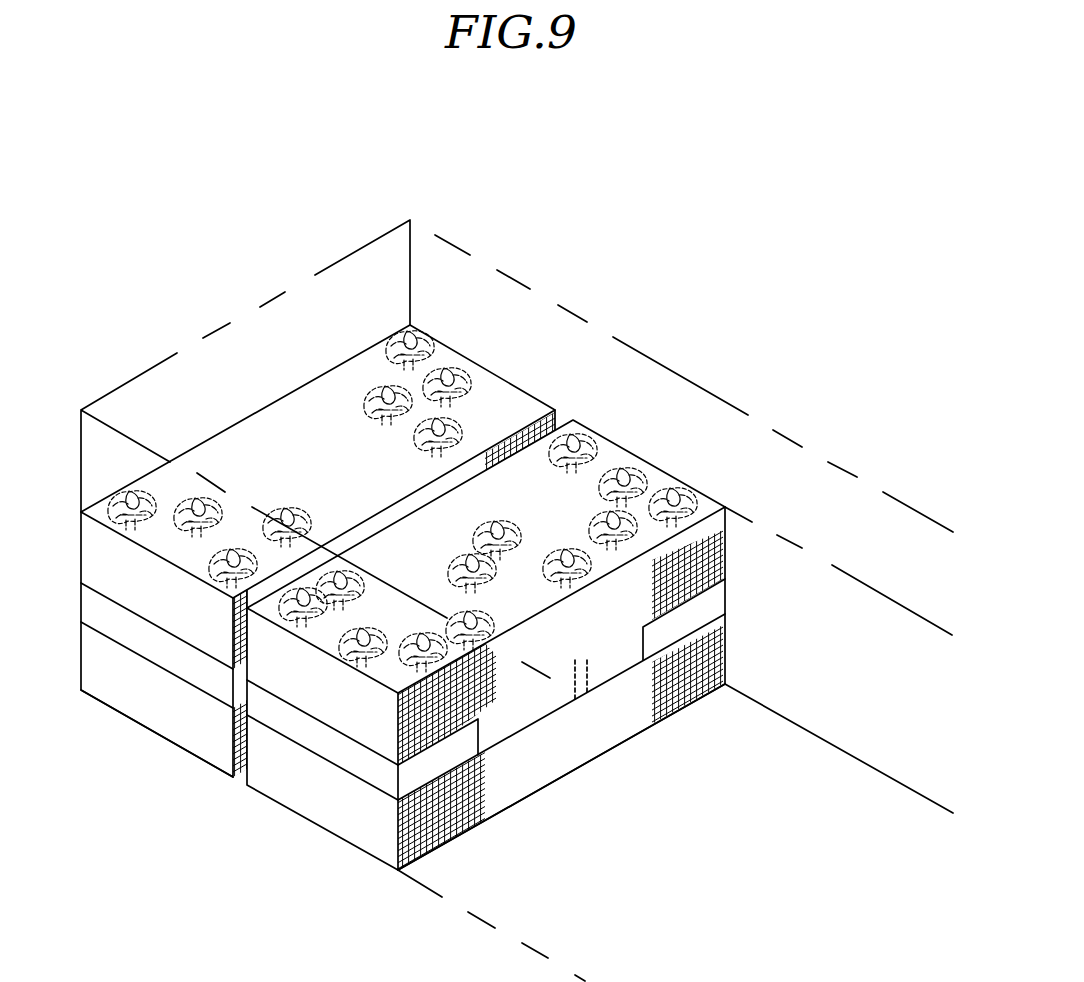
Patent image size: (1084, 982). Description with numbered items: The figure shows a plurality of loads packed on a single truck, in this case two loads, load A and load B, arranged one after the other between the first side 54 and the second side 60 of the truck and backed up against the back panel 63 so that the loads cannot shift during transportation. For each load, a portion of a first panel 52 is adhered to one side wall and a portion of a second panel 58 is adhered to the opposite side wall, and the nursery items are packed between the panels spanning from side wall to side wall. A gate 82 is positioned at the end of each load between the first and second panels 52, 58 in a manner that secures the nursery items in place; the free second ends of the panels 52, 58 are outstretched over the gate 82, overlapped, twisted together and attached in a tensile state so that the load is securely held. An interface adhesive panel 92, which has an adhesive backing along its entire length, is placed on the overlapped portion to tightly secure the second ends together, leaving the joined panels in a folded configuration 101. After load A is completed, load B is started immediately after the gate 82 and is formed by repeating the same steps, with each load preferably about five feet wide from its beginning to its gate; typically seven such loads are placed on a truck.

The first side 54 is at (772, 444).
The second side 60 is at (149, 417).
The back panel 63 is at (316, 305).
The panel 58 is at (213, 675).
The panel 52 is at (686, 614).
The gate 82 is at (686, 558).
The interface adhesive panel 92 is at (517, 717).
The folded configuration 101 is at (588, 673).
The load A is at (513, 383).
The load B is at (637, 453).